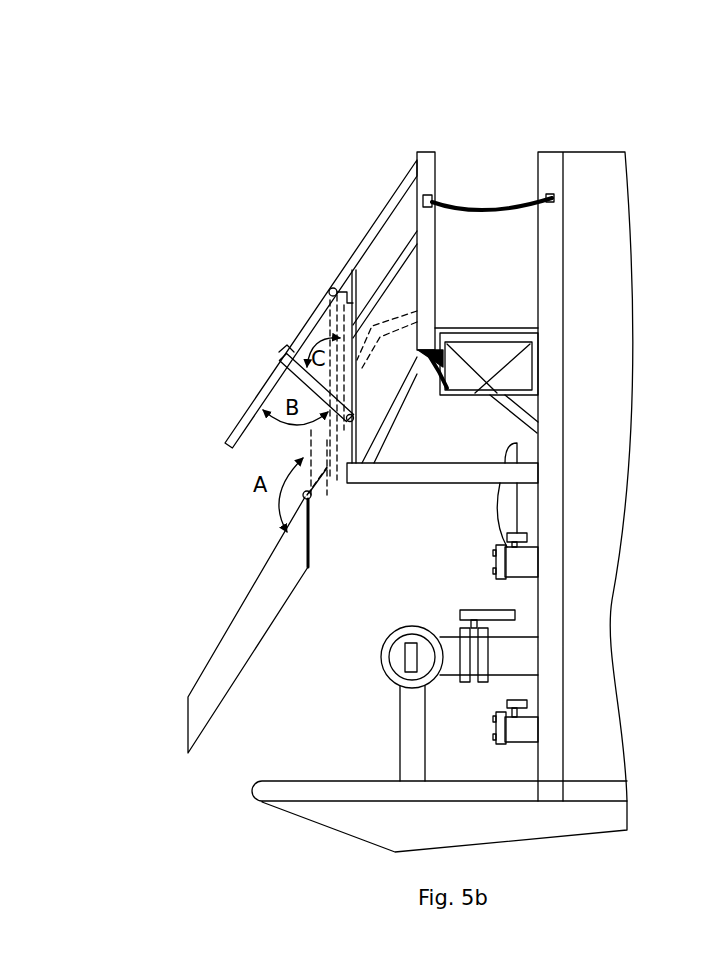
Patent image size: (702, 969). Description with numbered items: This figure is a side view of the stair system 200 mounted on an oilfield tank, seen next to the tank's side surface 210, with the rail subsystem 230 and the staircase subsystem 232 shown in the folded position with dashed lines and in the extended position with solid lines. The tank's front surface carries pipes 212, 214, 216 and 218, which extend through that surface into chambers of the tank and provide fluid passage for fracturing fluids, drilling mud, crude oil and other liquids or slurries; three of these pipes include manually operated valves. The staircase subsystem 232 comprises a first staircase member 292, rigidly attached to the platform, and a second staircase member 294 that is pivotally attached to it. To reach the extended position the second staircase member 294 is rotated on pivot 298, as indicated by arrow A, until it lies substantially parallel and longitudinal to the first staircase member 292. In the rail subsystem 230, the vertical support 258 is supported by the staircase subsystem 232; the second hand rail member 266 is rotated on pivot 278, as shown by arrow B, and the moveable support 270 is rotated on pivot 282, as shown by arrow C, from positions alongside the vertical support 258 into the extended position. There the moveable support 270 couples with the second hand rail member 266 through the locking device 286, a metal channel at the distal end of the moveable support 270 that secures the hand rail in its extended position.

The stair system 200 is at (258, 153).
The side surface 210 is at (616, 349).
The rail subsystem 230 is at (230, 282).
The staircase subsystem 232 is at (230, 510).
The vertical support 258 is at (370, 483).
The second hand rail member 266 is at (228, 440).
The moveable support 270 is at (297, 375).
The pivot joint 278 is at (330, 289).
The pivot joint 282 is at (354, 418).
The locking device 286 is at (310, 367).
The first staircase member 292 is at (400, 463).
The second staircase member 294 is at (190, 740).
The pivot joint 298 is at (310, 500).
The pipe 212 is at (528, 575).
The pipe 214 is at (527, 743).
The pipe 216 is at (520, 677).
The pipe 218 is at (538, 510).